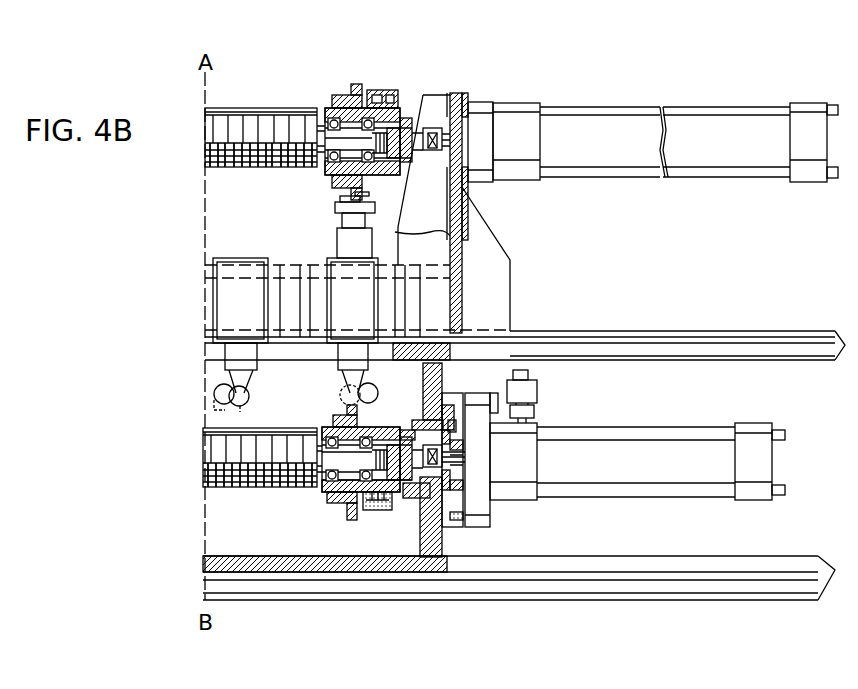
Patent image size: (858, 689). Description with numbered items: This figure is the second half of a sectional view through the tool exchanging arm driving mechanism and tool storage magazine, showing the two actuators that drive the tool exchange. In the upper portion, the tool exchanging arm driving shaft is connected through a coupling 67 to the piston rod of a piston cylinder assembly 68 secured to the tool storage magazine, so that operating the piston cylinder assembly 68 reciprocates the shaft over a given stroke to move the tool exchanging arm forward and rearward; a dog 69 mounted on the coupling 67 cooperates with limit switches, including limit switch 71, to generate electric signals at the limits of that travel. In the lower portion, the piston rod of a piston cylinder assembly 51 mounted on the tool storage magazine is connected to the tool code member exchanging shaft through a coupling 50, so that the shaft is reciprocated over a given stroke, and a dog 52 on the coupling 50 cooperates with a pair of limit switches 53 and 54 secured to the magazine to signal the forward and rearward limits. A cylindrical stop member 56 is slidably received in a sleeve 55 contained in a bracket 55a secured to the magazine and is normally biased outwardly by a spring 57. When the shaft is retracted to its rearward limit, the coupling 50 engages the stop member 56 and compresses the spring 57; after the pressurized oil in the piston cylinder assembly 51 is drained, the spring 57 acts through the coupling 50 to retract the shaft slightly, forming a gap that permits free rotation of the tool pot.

The coupling 50 is at (380, 510).
The piston cylinder assembly 51 is at (612, 497).
The dog 52 is at (337, 503).
The limit switch 53 is at (235, 265).
The limit switch 54 is at (338, 283).
The sleeve 55 is at (417, 500).
The bracket 55a is at (423, 381).
The cylindrical stop member 56 is at (410, 498).
The spring 57 is at (463, 527).
The coupling 67 is at (375, 88).
The piston cylinder assembly 68 is at (523, 113).
The dog 69 is at (353, 84).
The limit switch 71 is at (346, 202).